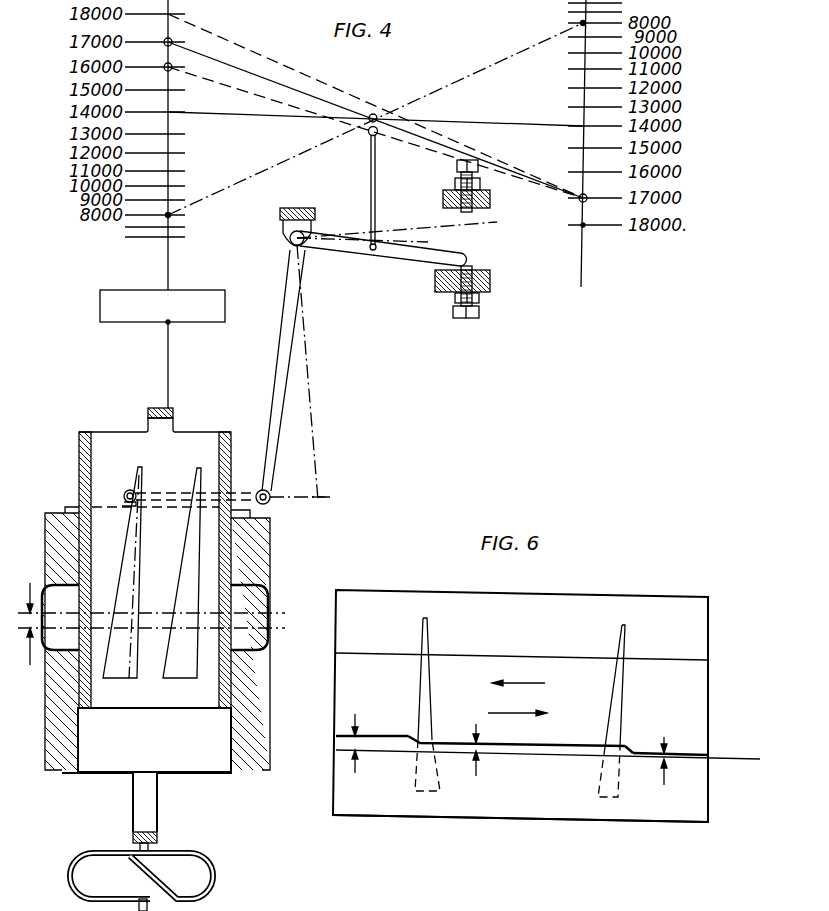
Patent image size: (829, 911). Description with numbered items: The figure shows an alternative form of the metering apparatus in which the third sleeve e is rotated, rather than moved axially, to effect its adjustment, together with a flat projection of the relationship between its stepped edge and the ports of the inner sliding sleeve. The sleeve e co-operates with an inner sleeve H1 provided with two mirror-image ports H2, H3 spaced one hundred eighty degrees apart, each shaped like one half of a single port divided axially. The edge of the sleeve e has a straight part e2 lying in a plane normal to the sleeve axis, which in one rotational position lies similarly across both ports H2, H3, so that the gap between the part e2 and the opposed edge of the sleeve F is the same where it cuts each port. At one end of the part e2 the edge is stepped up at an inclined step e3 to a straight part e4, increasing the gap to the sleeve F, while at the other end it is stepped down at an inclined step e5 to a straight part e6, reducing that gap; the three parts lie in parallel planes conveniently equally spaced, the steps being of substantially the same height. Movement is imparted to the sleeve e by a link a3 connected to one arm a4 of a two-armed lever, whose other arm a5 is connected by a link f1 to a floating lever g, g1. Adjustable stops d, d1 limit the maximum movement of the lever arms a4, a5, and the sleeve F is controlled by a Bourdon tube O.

In FIG. 4, the floating lever g is at (282, 78).
In FIG. 4, the floating lever g1 is at (497, 163).
In FIG. 4, the link f1 is at (375, 186).
In FIG. 4, the adjustable stop d is at (482, 204).
In FIG. 4, the adjustable stop d1 is at (482, 282).
In FIG. 4, the lever arm a5 is at (404, 258).
In FIG. 4, the lever arm a4 is at (282, 366).
In FIG. 4, the link a3 is at (243, 493).
In FIG. 4, the inner sleeve H1 is at (238, 568).
In FIG. 6, the inner sleeve H1 is at (695, 625).
In FIG. 4, the sleeve e is at (240, 548).
In FIG. 6, the sleeve e is at (698, 687).
In FIG. 4, the step e5 is at (240, 592).
In FIG. 6, the step e5 is at (626, 746).
In FIG. 4, the straight edge part e2 is at (192, 618).
In FIG. 6, the straight edge part e2 is at (571, 745).
In FIG. 6, the step e3 is at (410, 741).
In FIG. 6, the edge part e4 is at (388, 735).
In FIG. 6, the edge part e6 is at (693, 753).
In FIG. 4, the port H3 is at (85, 665).
In FIG. 6, the port H3 is at (423, 740).
In FIG. 4, the port H2 is at (183, 669).
In FIG. 6, the port H2 is at (615, 752).
In FIG. 4, the sleeve F is at (233, 729).
In FIG. 6, the sleeve F is at (695, 793).
In FIG. 4, the Bourdon tube O is at (214, 873).